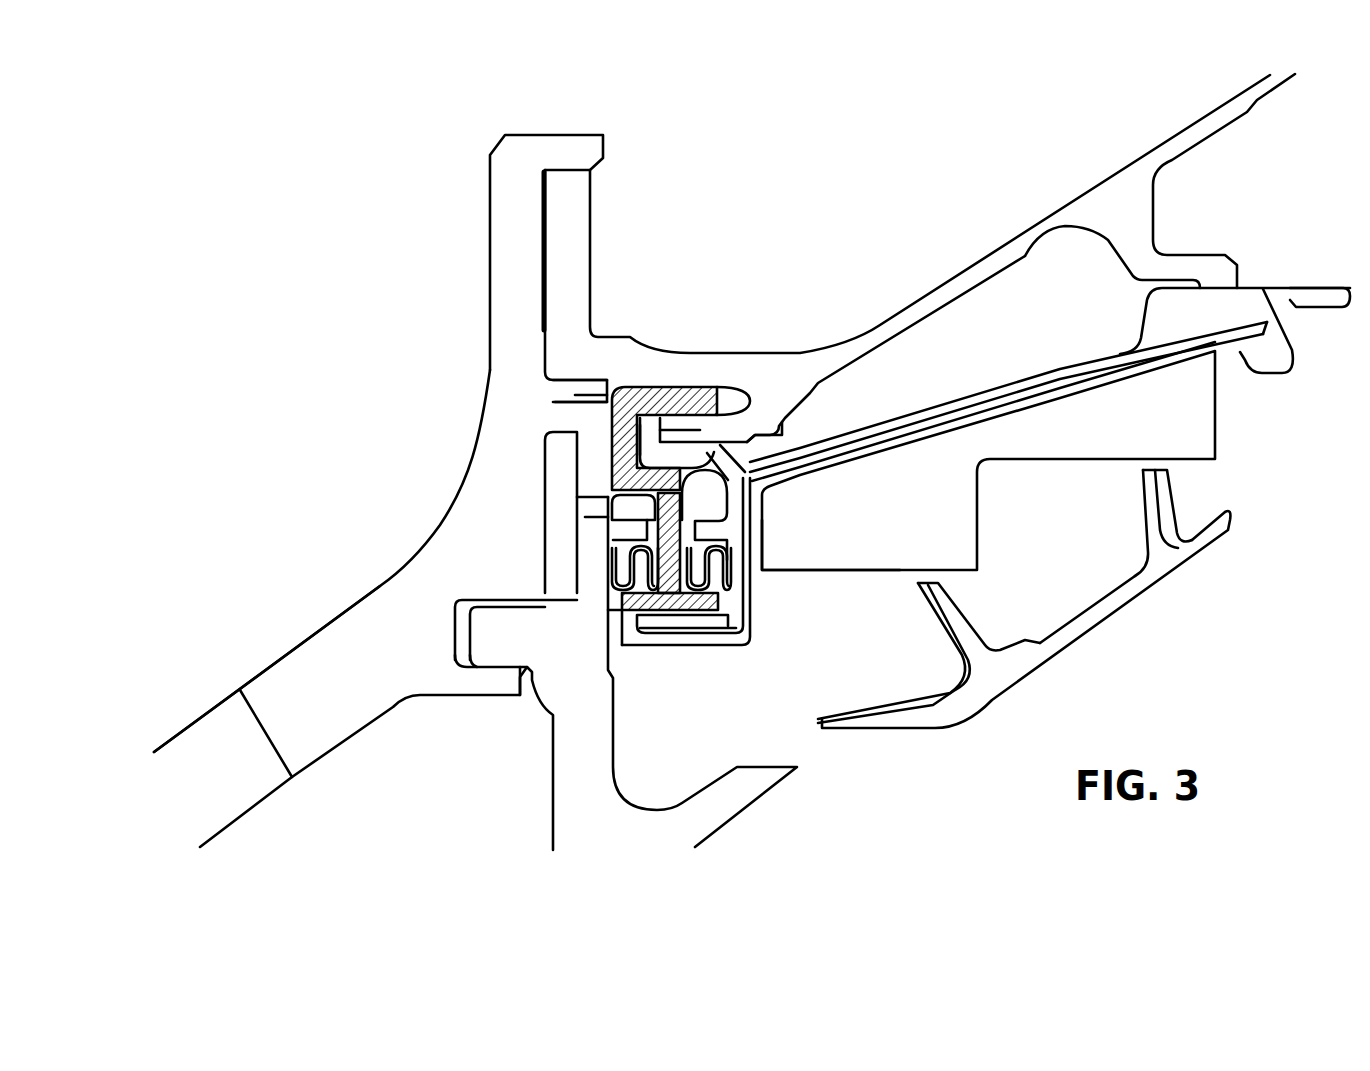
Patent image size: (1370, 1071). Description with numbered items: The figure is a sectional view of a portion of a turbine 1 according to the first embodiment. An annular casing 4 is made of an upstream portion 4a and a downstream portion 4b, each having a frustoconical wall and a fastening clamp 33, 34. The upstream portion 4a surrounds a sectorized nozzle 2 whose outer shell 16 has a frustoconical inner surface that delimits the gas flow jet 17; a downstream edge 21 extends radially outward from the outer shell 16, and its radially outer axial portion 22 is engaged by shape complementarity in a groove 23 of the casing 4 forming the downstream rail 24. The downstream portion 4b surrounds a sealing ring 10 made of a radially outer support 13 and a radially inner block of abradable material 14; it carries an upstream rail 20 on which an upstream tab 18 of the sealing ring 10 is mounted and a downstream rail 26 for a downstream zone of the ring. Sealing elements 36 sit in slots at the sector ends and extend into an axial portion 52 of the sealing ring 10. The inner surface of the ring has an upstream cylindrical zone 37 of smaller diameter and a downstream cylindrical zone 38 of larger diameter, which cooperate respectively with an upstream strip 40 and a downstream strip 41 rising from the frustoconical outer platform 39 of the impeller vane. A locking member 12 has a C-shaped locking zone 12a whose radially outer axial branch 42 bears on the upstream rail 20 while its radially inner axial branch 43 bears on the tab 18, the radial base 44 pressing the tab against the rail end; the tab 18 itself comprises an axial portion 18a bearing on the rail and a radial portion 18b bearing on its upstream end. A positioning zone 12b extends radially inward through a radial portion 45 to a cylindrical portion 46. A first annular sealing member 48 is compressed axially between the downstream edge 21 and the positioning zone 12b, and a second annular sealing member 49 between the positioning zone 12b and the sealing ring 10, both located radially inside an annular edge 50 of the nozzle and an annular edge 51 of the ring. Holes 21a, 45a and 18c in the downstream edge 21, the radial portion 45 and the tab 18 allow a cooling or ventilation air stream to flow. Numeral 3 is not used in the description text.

The turbine 1 is at (827, 140).
The nozzle 2 is at (662, 722).
The rotor shaft 3 is at (662, 722).
The annular casing 4 is at (353, 718).
The upstream portion of the casing 4a is at (290, 697).
The downstream portion of the casing 4b is at (1043, 238).
The sealing ring 10 is at (983, 456).
The locking member 12 is at (673, 357).
The locking zone 12a is at (673, 357).
The positioning zone 12b is at (683, 627).
The radially outer support 13 is at (1175, 323).
The block of abradable material 14 is at (1033, 432).
The outer shell 16 is at (600, 826).
The gas flow jet 17 is at (956, 827).
The upstream tab 18 is at (711, 367).
The axial portion of the tab 18a is at (686, 455).
The radial portion of the tab 18b is at (636, 395).
The hole in the upstream tab 18c is at (752, 455).
The upstream rail 20 is at (720, 430).
The downstream edge 21 is at (490, 617).
The hole in the downstream edge 21a is at (577, 753).
The axial portion of the downstream edge 22 is at (488, 625).
The groove 23 is at (463, 633).
The downstream rail of the casing 24 is at (482, 685).
The downstream rail 26 is at (1197, 268).
The fastening clamp 33 is at (507, 220).
The fastening clamp 34 is at (570, 203).
The sealing elements 36 is at (1007, 398).
The upstream cylindrical zone 37 is at (843, 572).
The downstream cylindrical zone 38 is at (1198, 462).
The outer platform 39 is at (1102, 610).
The upstream strip 40 is at (960, 613).
The downstream strip 41 is at (1155, 523).
The radially outer axial branch 42 is at (677, 388).
The radially inner axial branch 43 is at (600, 457).
The radial base 44 is at (610, 428).
The radial portion of the positioning zone 45 is at (662, 560).
The hole in the radial portion 45a is at (662, 505).
The cylindrical portion 46 is at (705, 600).
The first annular sealing member 48 is at (612, 558).
The second annular sealing member 49 is at (725, 585).
The annular edge 50 is at (633, 525).
The annular edge 51 is at (700, 528).
The axial portion of the sealing ring 52 is at (657, 633).